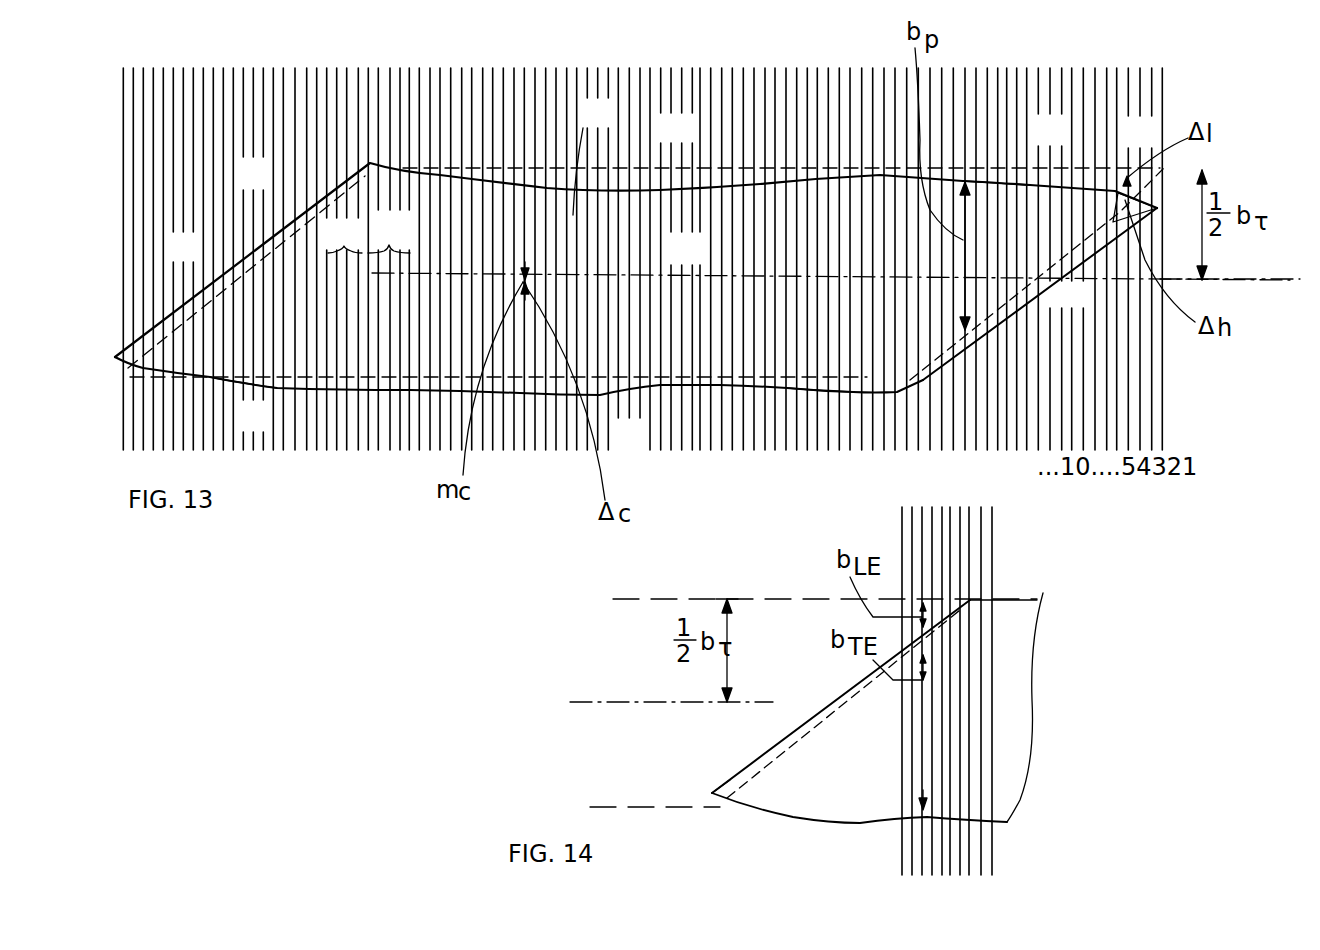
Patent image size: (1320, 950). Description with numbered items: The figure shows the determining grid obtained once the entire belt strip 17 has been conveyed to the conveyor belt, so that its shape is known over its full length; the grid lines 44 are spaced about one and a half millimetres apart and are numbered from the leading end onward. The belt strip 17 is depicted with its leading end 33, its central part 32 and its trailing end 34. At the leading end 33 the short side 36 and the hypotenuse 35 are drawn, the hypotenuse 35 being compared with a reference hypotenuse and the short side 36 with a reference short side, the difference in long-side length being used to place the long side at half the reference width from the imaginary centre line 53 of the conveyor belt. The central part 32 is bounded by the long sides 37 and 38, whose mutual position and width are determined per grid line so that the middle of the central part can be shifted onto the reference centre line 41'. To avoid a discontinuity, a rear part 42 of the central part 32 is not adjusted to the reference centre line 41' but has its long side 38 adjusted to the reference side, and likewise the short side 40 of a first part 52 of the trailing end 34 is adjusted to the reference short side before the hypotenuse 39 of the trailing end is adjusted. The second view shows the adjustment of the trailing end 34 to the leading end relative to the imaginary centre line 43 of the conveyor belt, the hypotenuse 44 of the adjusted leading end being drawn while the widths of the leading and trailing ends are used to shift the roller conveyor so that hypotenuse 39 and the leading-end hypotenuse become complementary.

In FIG. 13, the belt strip 17 is at (846, 395).
In FIG. 13, the central part 32 is at (593, 158).
In FIG. 13, the leading end 33 is at (1005, 223).
In FIG. 13, the trailing end 34 is at (283, 272).
In FIG. 14, the trailing end 34 is at (862, 790).
In FIG. 13, the hypotenuse 35 is at (1028, 290).
In FIG. 13, the short side 36 is at (1093, 190).
In FIG. 13, the long side 37 is at (630, 183).
In FIG. 13, the long side 38 is at (600, 396).
In FIG. 13, the hypotenuse 39 is at (202, 300).
In FIG. 14, the hypotenuse 39 is at (725, 785).
In FIG. 13, the short side 40 is at (246, 393).
In FIG. 13, the reference centre line 41' is at (831, 257).
In FIG. 13, the rear part 42 is at (389, 234).
In FIG. 14, the imaginary centre line 43 is at (620, 701).
In FIG. 13, the grid lines 44 is at (1062, 70).
In FIG. 14, the grid lines 44 is at (835, 715).
In FIG. 13, the first part 52 is at (358, 248).
In FIG. 13, the imaginary centre line 53 is at (1232, 280).